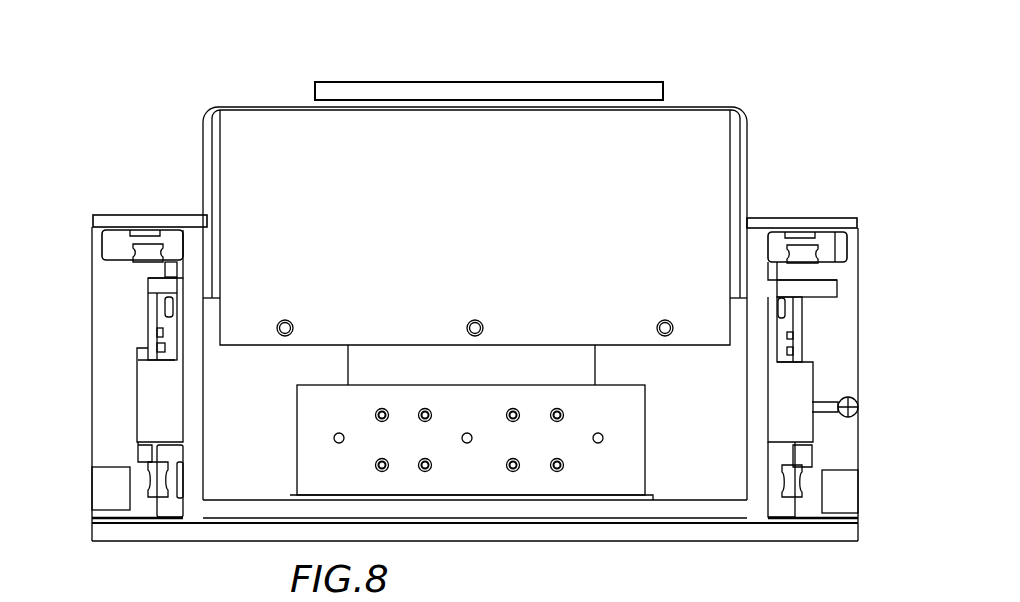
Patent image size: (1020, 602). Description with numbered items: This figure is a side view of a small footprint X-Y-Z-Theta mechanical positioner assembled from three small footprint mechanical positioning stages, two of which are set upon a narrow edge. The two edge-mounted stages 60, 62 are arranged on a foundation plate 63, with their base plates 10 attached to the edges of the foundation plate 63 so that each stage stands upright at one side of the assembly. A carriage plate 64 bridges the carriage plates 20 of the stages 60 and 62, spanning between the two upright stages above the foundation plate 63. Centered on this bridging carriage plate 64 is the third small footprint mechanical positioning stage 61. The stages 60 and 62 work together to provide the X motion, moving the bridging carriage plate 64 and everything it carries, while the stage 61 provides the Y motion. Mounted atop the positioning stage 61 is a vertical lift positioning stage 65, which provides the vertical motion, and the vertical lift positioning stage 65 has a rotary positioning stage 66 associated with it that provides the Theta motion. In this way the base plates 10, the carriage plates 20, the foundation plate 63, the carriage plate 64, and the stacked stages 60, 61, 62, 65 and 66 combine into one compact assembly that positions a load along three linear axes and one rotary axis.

The base plate 10 is at (123, 341).
The carriage plate 20 is at (179, 398).
The small footprint mechanical stage 60 is at (95, 286).
The small footprint mechanical positioning stage 61 is at (638, 404).
The small footprint mechanical stage 62 is at (785, 218).
The foundation plate 63 is at (613, 542).
The carriage plate 64 is at (676, 505).
The vertical lift positioning stage 65 is at (476, 372).
The rotary positioning stage 66 is at (570, 85).